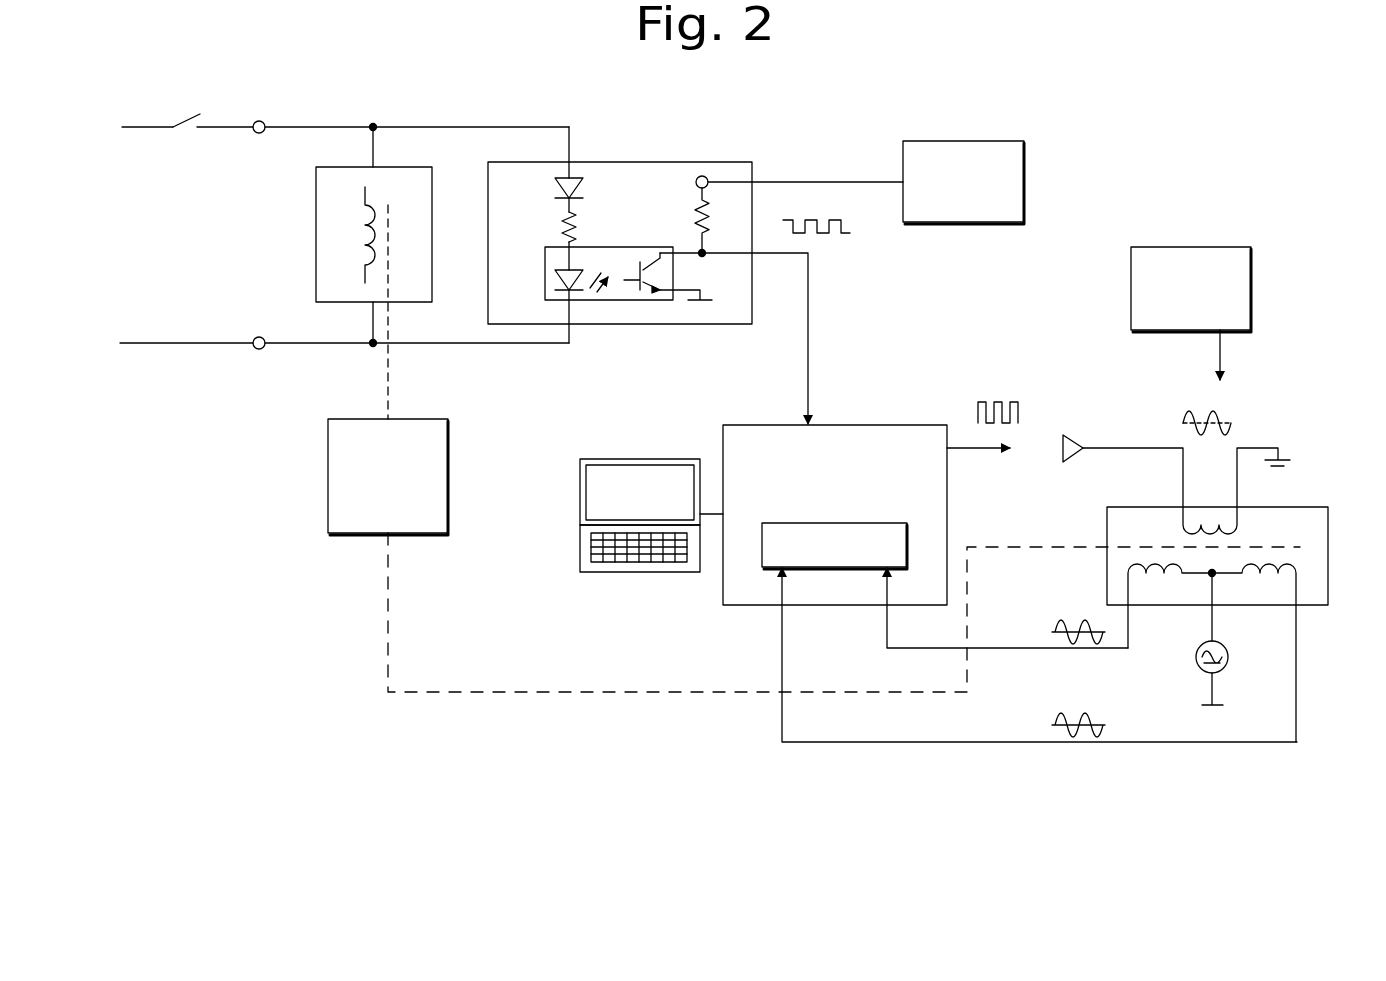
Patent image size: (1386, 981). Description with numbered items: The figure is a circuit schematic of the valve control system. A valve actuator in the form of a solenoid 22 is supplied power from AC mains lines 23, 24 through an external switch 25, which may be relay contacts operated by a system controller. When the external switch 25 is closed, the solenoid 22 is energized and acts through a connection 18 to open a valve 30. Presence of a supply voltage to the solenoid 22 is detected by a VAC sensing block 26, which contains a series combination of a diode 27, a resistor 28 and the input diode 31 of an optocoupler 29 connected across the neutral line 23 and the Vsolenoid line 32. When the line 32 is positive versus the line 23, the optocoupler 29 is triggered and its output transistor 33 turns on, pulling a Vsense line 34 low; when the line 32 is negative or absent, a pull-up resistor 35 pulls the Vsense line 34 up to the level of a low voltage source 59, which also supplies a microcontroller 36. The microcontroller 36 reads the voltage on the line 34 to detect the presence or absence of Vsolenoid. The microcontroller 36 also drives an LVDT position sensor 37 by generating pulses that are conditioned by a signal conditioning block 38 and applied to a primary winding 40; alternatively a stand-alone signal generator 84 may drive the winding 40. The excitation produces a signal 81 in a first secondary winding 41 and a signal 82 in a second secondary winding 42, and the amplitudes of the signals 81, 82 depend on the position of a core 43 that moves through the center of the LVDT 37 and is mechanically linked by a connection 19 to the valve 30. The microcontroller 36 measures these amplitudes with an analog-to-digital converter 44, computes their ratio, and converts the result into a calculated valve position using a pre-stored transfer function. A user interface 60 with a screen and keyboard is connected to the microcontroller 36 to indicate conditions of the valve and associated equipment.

The connection 18 is at (386, 390).
The connection 19 is at (590, 691).
The valve actuator (solenoid) 22 is at (316, 235).
The AC mains line (N, neutral) 23 is at (152, 344).
The AC mains line 24 is at (137, 128).
The external switch 25 is at (185, 128).
The VAC sensing block 26 is at (745, 325).
The diode 27 is at (553, 195).
The resistor 28 is at (555, 224).
The optocoupler 29 is at (620, 247).
The valve 30 is at (328, 478).
The optocoupler input diode 31 is at (545, 281).
The line (Vsolenoid) 32 is at (515, 126).
The output transistor 33 is at (625, 281).
The Vsense line 34 is at (809, 284).
The pull-up resistor 35 is at (692, 212).
The microcontroller 36 is at (883, 424).
The LVDT position sensor 37 is at (1145, 507).
The signal conditioning block 38 is at (1062, 455).
The primary winding (PRIM) 40 is at (1215, 524).
The secondary winding (SEC1) 41 is at (1128, 562).
The secondary winding (SEC2) 42 is at (1297, 560).
The core 43 is at (1272, 547).
The analog-to-digital converter (ADC) 44 is at (888, 523).
The low voltage supply or source 59 is at (965, 141).
The user interface 60 is at (643, 459).
The signal (Vsec1) 81 is at (1060, 612).
The signal (Vsec2) 82 is at (1060, 705).
The signal generator 84 is at (1195, 247).